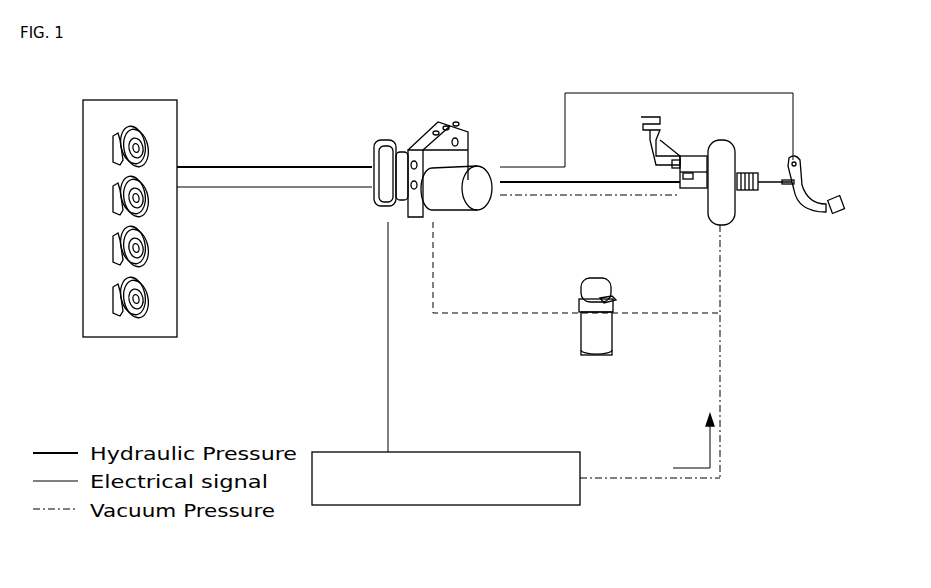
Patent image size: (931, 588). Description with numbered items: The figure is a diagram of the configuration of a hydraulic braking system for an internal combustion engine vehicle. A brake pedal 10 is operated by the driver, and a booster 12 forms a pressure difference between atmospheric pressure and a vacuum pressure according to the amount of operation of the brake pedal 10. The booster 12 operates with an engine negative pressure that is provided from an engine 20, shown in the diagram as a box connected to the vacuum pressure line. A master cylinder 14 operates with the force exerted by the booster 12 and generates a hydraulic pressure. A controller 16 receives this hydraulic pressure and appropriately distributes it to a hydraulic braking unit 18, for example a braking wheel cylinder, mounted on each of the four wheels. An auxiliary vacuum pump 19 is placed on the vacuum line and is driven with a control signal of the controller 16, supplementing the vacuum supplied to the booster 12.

The brake pedal 10 is at (802, 188).
The booster 12 is at (728, 152).
The master cylinder 14 is at (696, 190).
The controller 16 is at (466, 118).
The hydraulic braking unit 18 is at (110, 152).
The auxiliary vacuum pump 19 is at (586, 338).
The engine 20 is at (540, 507).